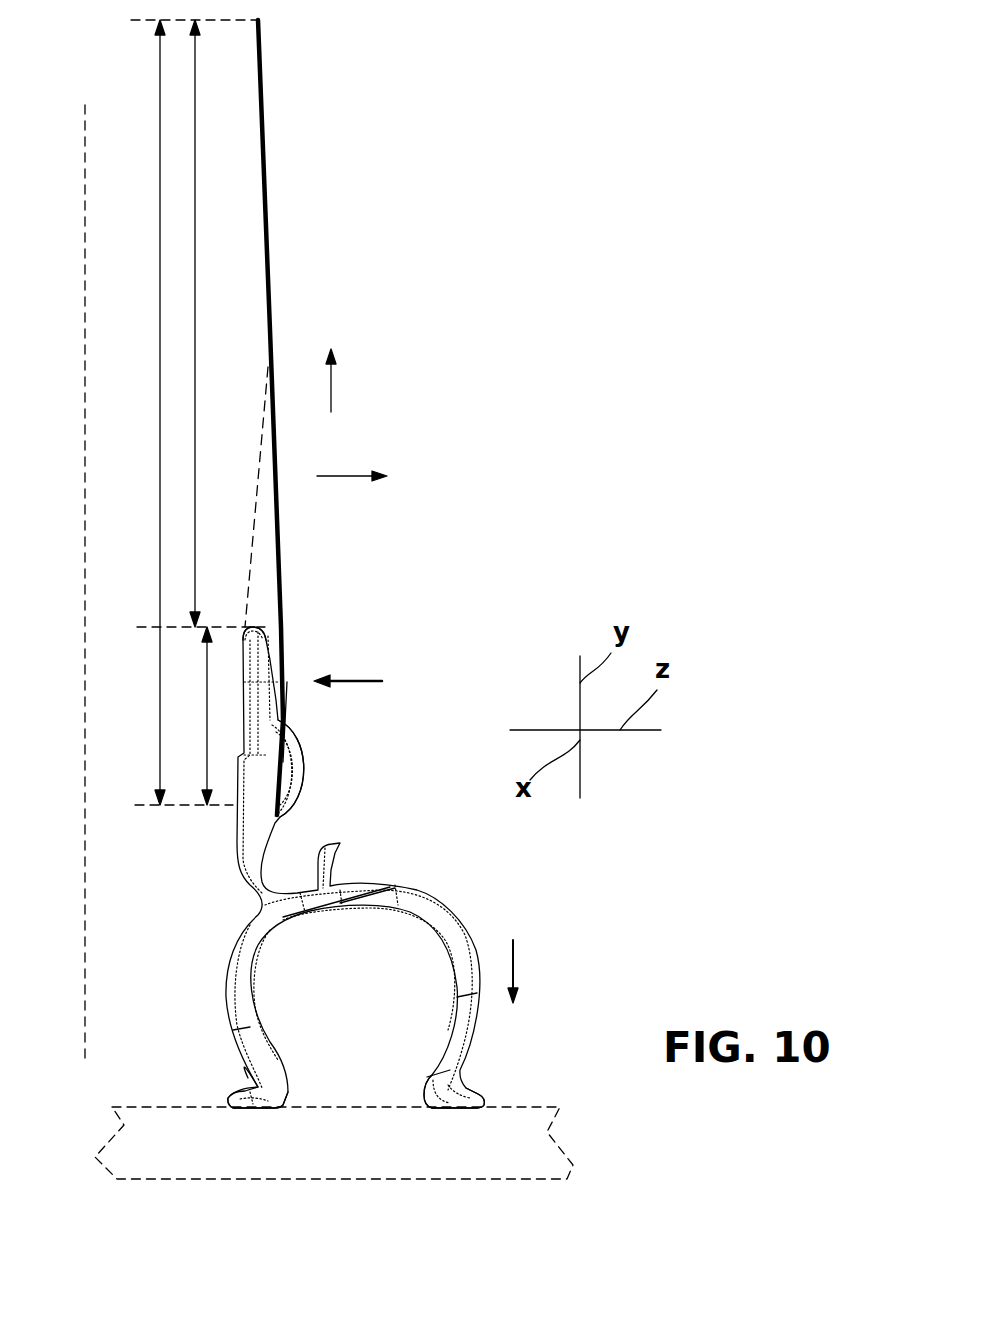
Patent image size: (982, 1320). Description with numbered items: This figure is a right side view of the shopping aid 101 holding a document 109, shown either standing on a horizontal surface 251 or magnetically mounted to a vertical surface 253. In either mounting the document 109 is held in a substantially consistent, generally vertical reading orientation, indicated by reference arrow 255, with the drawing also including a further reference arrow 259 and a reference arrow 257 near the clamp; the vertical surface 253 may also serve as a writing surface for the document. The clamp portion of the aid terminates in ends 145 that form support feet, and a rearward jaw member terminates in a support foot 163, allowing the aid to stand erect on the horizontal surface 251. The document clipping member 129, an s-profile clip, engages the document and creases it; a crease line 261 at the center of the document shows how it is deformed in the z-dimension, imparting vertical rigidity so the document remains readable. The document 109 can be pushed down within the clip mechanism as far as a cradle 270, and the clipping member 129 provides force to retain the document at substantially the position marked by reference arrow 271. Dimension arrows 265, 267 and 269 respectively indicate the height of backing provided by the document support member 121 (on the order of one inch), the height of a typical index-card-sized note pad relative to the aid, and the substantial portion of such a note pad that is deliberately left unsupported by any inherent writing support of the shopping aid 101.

The shopping aid 101 is at (372, 619).
The document 109 is at (266, 195).
The document support member 121 is at (262, 629).
The document clipping member 129 is at (291, 733).
The ends 145 is at (475, 1097).
The support foot 163 is at (262, 1100).
The horizontal surface 251 is at (425, 1147).
The vertical surface 253 is at (87, 842).
The reference arrow 255 is at (343, 472).
The downward force arrow 257 is at (517, 960).
The y direction arrow 259 is at (335, 400).
The crease line 261 is at (261, 463).
The dimension arrow 265 is at (208, 753).
The dimension arrow 267 is at (162, 698).
The dimension arrow 269 is at (196, 374).
The cradle 270 is at (279, 792).
The reference arrow 271 is at (368, 676).